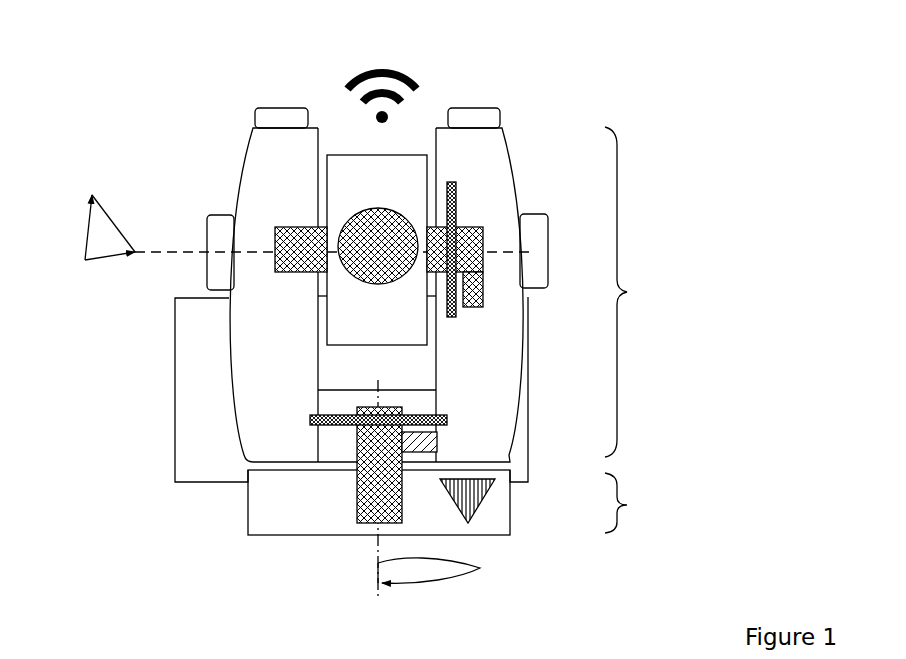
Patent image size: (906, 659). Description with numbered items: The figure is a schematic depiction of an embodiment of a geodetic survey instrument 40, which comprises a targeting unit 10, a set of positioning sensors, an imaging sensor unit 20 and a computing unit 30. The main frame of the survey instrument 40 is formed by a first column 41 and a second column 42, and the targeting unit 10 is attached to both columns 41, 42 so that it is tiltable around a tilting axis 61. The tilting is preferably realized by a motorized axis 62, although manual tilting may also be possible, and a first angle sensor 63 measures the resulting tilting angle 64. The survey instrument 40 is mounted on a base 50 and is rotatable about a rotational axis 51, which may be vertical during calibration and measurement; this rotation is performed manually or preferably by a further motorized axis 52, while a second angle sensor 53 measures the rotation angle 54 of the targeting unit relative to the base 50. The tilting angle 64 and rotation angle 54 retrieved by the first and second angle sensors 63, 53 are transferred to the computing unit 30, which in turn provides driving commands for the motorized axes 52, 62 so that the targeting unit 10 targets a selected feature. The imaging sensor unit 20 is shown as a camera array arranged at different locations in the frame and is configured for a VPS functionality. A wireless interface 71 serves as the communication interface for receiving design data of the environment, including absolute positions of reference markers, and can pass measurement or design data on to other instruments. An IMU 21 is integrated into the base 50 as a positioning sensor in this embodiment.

The targeting unit 10 is at (388, 334).
The imaging sensor unit 20 is at (254, 112).
The IMU 21 is at (478, 510).
The computing unit 30 is at (213, 404).
The survey instrument 40 is at (633, 292).
The first column 41 is at (289, 204).
The second column 42 is at (487, 384).
The base 50 is at (454, 502).
The rotational axis 51 is at (377, 545).
The motorized axis 52 is at (448, 417).
The second angle sensor 53 is at (437, 437).
The rotation angle 54 is at (488, 574).
The tilting axis 61 is at (272, 258).
The motorized axis 62 is at (457, 182).
The first angle sensor 63 is at (483, 305).
The tilting angle 64 is at (85, 238).
The wireless interface 71 is at (352, 90).